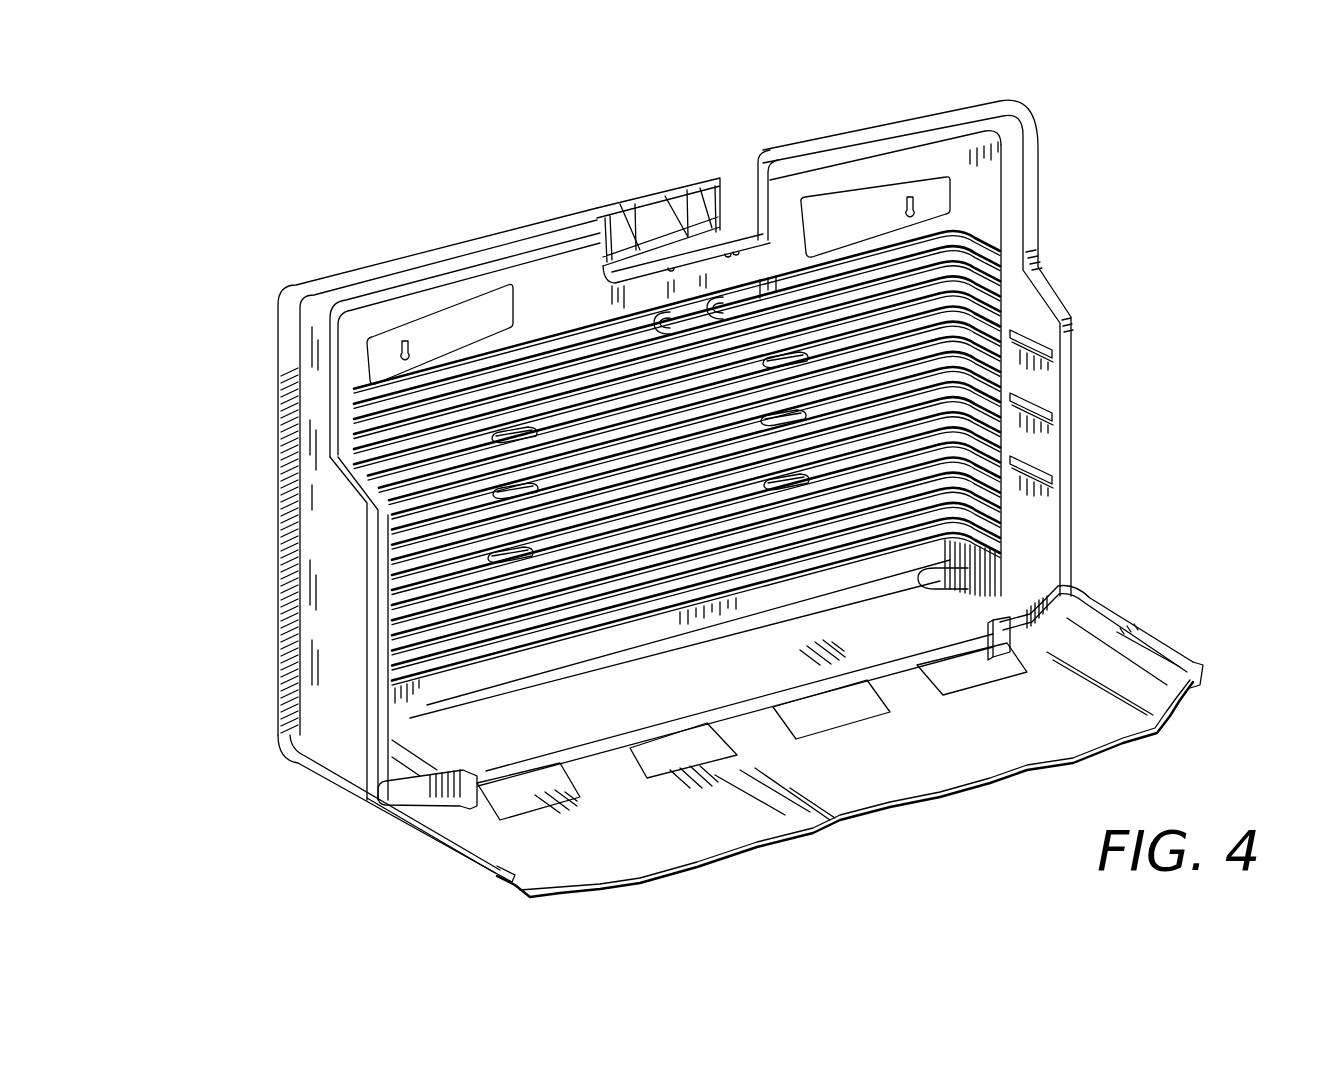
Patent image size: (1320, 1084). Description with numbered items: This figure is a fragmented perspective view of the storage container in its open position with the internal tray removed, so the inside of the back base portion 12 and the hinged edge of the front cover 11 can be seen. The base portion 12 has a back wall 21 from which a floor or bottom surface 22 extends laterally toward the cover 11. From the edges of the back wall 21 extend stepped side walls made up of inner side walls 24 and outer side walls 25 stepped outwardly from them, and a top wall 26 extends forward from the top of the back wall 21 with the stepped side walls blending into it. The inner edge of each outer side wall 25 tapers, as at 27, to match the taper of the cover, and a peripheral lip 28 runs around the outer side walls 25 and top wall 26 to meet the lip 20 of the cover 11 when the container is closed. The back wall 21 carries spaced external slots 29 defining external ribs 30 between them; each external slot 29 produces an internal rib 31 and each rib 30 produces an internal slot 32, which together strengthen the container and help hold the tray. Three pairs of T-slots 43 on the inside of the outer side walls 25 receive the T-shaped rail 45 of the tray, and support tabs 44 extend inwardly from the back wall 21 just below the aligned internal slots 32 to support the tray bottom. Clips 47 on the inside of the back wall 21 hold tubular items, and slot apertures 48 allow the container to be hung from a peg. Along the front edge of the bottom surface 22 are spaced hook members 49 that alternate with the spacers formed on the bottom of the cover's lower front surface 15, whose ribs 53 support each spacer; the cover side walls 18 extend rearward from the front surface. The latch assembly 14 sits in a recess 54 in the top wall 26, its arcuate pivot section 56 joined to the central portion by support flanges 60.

The front cover 11 is at (1123, 607).
The back base portion 12 is at (965, 98).
The latch assembly 14 is at (652, 182).
The lower front surface 15 is at (853, 787).
The cover side walls 18 is at (1137, 680).
The peripheral lip 20 is at (447, 837).
The back wall 21 is at (530, 287).
The bottom surface 22 is at (915, 610).
The inner side walls 24 is at (985, 195).
The outer side walls 25 is at (1037, 328).
The top wall 26 is at (500, 230).
The taper 27 is at (1045, 287).
The peripheral lip 28 is at (985, 116).
The external slots 29 is at (282, 543).
The external ribs 30 is at (282, 582).
The internal ribs 31 is at (813, 280).
The internal slots 32 is at (356, 399).
The T-slots 43 is at (1040, 352).
The support tabs 44 is at (800, 355).
The T-shaped rail 45 is at (407, 348).
The clips 47 is at (760, 295).
The slot apertures 48 is at (925, 203).
The hook members 49 is at (897, 680).
The ribs 53 is at (985, 677).
The recess 54 is at (700, 250).
The arcuate pivot section 56 is at (634, 222).
The support flanges 60 is at (625, 223).